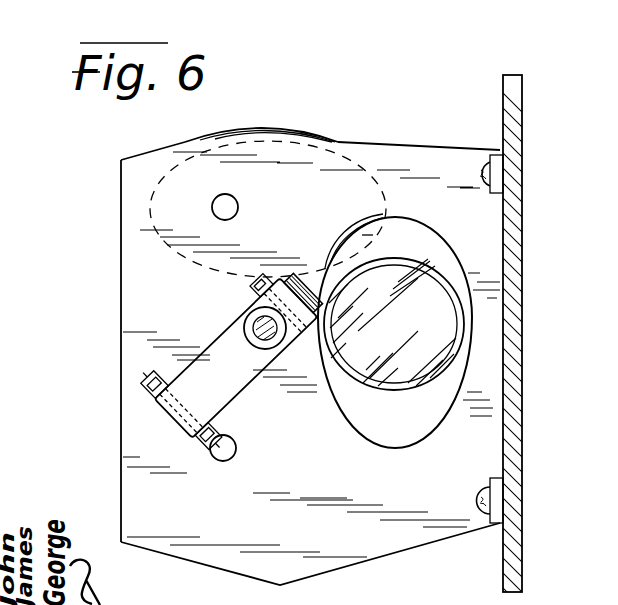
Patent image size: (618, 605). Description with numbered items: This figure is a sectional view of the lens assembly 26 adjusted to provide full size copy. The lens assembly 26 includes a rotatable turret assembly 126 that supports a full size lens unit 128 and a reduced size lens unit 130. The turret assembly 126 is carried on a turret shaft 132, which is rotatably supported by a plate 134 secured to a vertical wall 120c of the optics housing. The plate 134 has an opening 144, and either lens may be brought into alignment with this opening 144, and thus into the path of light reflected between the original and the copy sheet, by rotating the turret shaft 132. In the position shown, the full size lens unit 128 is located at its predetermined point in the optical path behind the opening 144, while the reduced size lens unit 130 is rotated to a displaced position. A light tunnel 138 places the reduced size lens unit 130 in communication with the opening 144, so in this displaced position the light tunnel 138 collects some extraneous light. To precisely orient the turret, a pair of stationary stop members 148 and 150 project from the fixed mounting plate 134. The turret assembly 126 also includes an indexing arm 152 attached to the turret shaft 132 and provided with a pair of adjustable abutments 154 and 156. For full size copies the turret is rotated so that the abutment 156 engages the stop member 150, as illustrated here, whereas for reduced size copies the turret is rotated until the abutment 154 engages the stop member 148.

The lens assembly 26 is at (97, 148).
The vertical wall 120c is at (522, 122).
The rotatable turret assembly 126 is at (348, 134).
The full size lens unit 128 is at (398, 392).
The reduced size lens unit 130 is at (280, 128).
The turret shaft 132 is at (258, 322).
The plate 134 is at (329, 571).
The light tunnel 138 is at (386, 219).
The opening 144 is at (340, 425).
The stop member 148 is at (238, 207).
The stop member 150 is at (227, 455).
The indexing arm 152 is at (237, 383).
The adjustable abutment 154 is at (155, 380).
The adjustable abutment 156 is at (207, 447).